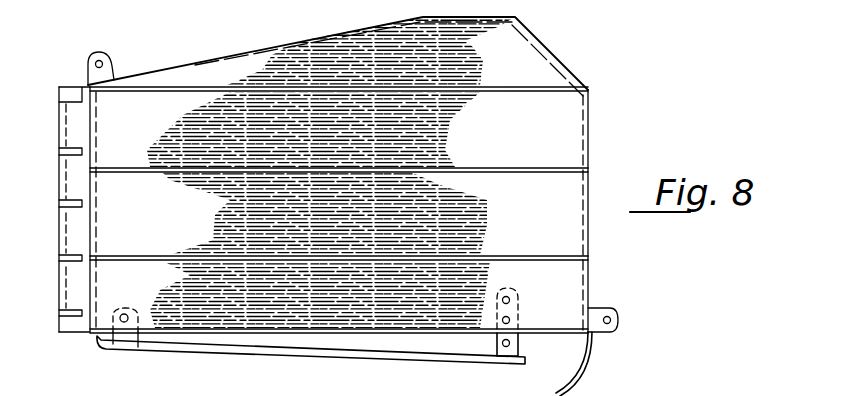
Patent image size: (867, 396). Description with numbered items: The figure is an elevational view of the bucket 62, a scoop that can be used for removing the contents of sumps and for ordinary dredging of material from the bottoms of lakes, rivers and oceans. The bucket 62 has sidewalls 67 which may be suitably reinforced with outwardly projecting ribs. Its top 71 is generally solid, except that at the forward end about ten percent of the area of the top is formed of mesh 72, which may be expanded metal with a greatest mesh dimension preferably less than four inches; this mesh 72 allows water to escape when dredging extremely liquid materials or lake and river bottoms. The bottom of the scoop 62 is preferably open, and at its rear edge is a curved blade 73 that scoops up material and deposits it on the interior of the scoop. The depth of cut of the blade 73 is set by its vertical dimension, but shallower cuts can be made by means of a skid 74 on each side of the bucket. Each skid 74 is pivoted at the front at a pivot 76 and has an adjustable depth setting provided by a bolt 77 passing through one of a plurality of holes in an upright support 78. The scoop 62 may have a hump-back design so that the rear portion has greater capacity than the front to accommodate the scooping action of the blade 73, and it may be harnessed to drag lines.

The bucket 62 is at (93, 378).
The sidewalls 67 is at (228, 219).
The top 71 is at (533, 38).
The mesh 72 is at (160, 83).
The curved blade 73 is at (566, 388).
The skid 74 is at (324, 358).
The pivot 76 is at (128, 314).
The bolt 77 is at (520, 318).
The upright support 78 is at (520, 349).